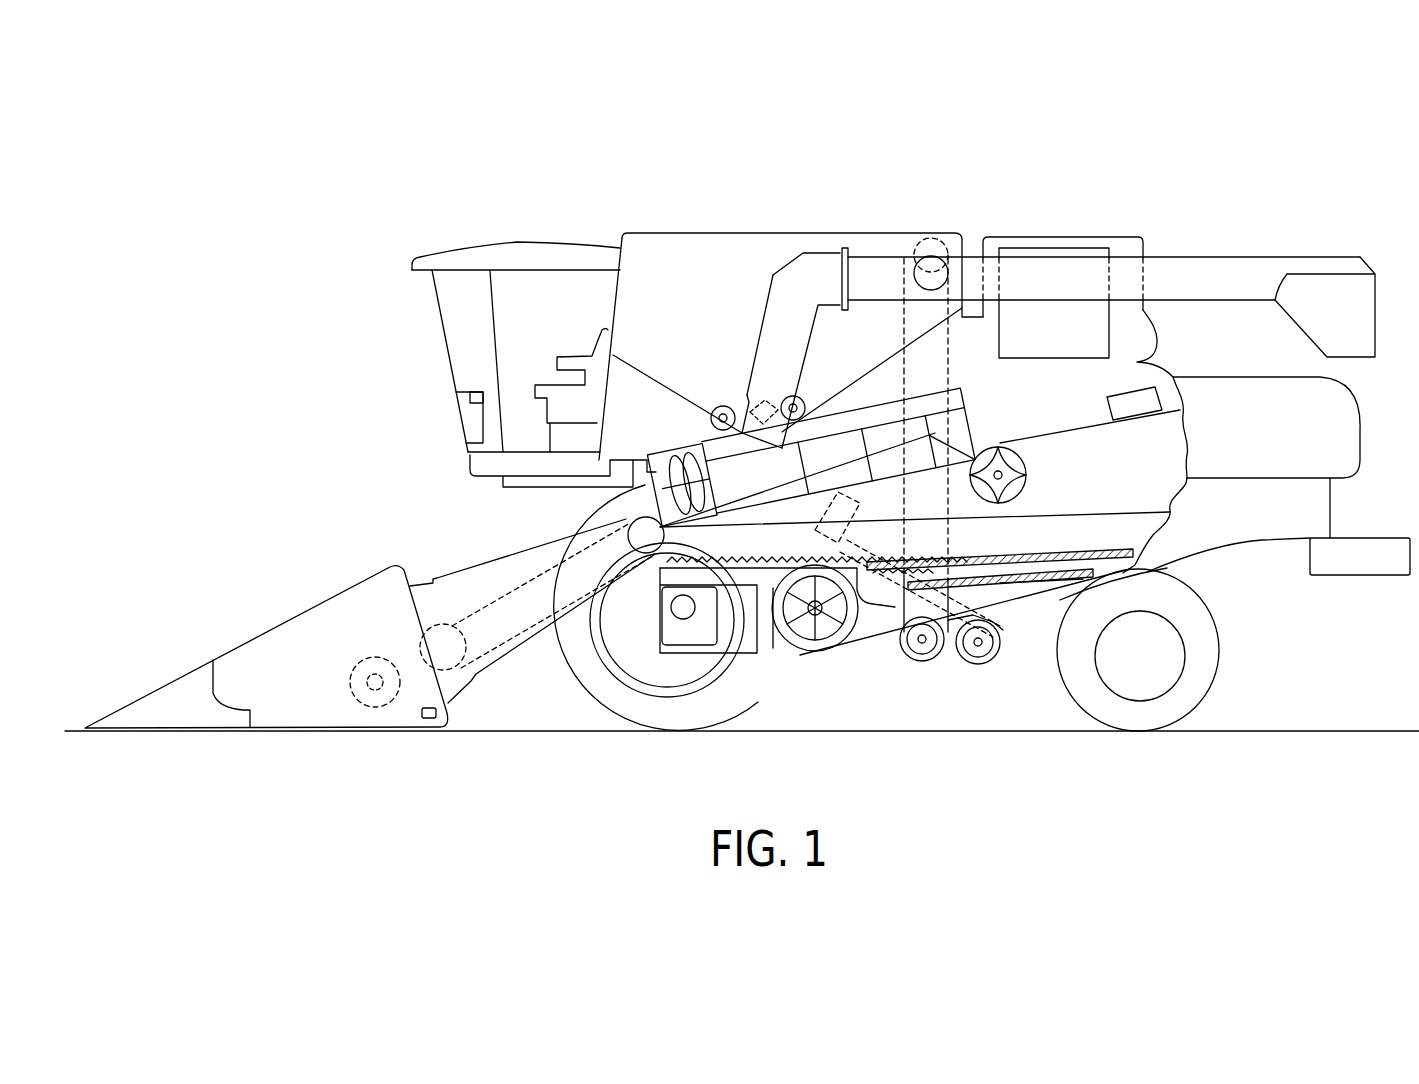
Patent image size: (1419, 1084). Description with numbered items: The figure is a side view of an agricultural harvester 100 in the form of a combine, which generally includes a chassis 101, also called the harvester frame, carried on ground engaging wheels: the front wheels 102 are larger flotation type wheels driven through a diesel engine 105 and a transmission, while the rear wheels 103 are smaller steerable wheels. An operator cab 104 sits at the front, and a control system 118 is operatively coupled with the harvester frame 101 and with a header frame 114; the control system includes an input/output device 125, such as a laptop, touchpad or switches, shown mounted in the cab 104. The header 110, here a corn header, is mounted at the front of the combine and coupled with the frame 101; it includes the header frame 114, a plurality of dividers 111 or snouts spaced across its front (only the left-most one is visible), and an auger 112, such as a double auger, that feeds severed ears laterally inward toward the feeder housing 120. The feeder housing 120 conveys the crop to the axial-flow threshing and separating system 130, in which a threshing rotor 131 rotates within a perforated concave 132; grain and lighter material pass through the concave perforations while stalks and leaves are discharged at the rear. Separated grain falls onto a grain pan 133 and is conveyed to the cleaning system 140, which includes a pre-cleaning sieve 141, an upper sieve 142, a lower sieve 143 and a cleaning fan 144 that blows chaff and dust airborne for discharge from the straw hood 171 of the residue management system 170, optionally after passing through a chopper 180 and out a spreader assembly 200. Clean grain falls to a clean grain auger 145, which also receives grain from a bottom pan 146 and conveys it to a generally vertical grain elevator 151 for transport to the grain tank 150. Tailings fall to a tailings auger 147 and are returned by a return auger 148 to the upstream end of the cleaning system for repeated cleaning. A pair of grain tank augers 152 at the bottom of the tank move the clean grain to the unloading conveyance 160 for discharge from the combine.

The agricultural harvester 100 is at (507, 227).
The chassis 101 is at (1157, 575).
The front wheels 102 is at (590, 687).
The rear wheels 103 is at (1215, 670).
The operator cab 104 is at (442, 325).
The diesel engine 105 is at (1042, 250).
The header 110 is at (253, 608).
The dividers 111 is at (110, 713).
The auger 112 is at (372, 658).
The header frame 114 is at (428, 722).
The control system 118 is at (485, 436).
The feeder housing 120 is at (483, 565).
The input/output device 125 is at (477, 390).
The threshing and separating system 130 is at (593, 502).
The threshing rotor 131 is at (672, 458).
The concave 132 is at (843, 440).
The grain pan 133 is at (662, 562).
The cleaning system 140 is at (870, 669).
The pre-cleaning sieve 141 is at (957, 556).
The upper sieve 142 is at (1053, 552).
The lower sieve 143 is at (1027, 590).
The cleaning fan 144 is at (813, 650).
The clean grain auger 145 is at (923, 644).
The bottom pan 146 is at (1113, 648).
The tailings auger 147 is at (978, 646).
The return auger 148 is at (885, 540).
The grain tank 150 is at (673, 245).
The grain elevator 151 is at (955, 368).
The grain tank augers 152 is at (723, 406).
The unloading conveyance 160 is at (1232, 267).
The residue management system 170 is at (1307, 595).
The straw hood 171 is at (1343, 420).
The chopper 180 is at (1108, 413).
The spreader assembly 200 is at (1384, 531).